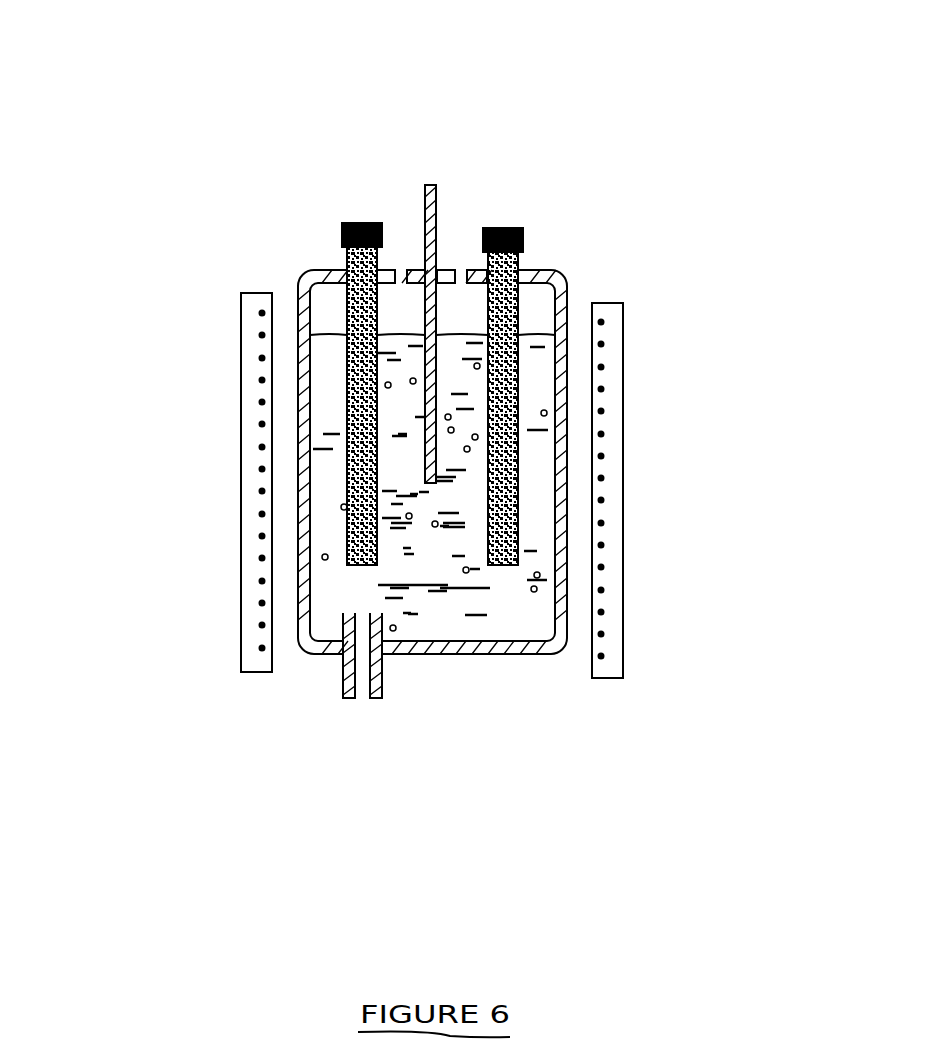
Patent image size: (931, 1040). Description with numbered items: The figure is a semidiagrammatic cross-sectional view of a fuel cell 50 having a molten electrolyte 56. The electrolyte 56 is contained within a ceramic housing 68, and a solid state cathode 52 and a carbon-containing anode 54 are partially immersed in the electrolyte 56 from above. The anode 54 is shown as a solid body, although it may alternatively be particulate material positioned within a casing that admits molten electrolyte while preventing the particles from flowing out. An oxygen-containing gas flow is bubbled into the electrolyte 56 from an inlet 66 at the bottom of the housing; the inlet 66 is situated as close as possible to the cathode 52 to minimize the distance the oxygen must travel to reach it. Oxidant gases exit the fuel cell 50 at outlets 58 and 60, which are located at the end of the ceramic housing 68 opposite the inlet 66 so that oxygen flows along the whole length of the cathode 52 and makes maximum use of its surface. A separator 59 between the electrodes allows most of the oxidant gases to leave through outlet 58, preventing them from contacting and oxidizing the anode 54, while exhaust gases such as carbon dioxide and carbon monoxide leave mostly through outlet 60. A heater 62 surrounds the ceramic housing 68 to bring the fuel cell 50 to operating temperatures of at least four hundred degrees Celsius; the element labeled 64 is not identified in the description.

The fuel cell 50 is at (428, 75).
The solid state cathode 52 is at (293, 257).
The carbon-containing anode 54 is at (567, 258).
The molten electrolyte 56 is at (445, 590).
The outlet 58 is at (407, 243).
The separator 59 is at (433, 168).
The outlet 60 is at (472, 243).
The heater 62 is at (200, 437).
The cell bottom 64 is at (480, 660).
The inlet 66 is at (372, 738).
The ceramic housing 68 is at (552, 662).